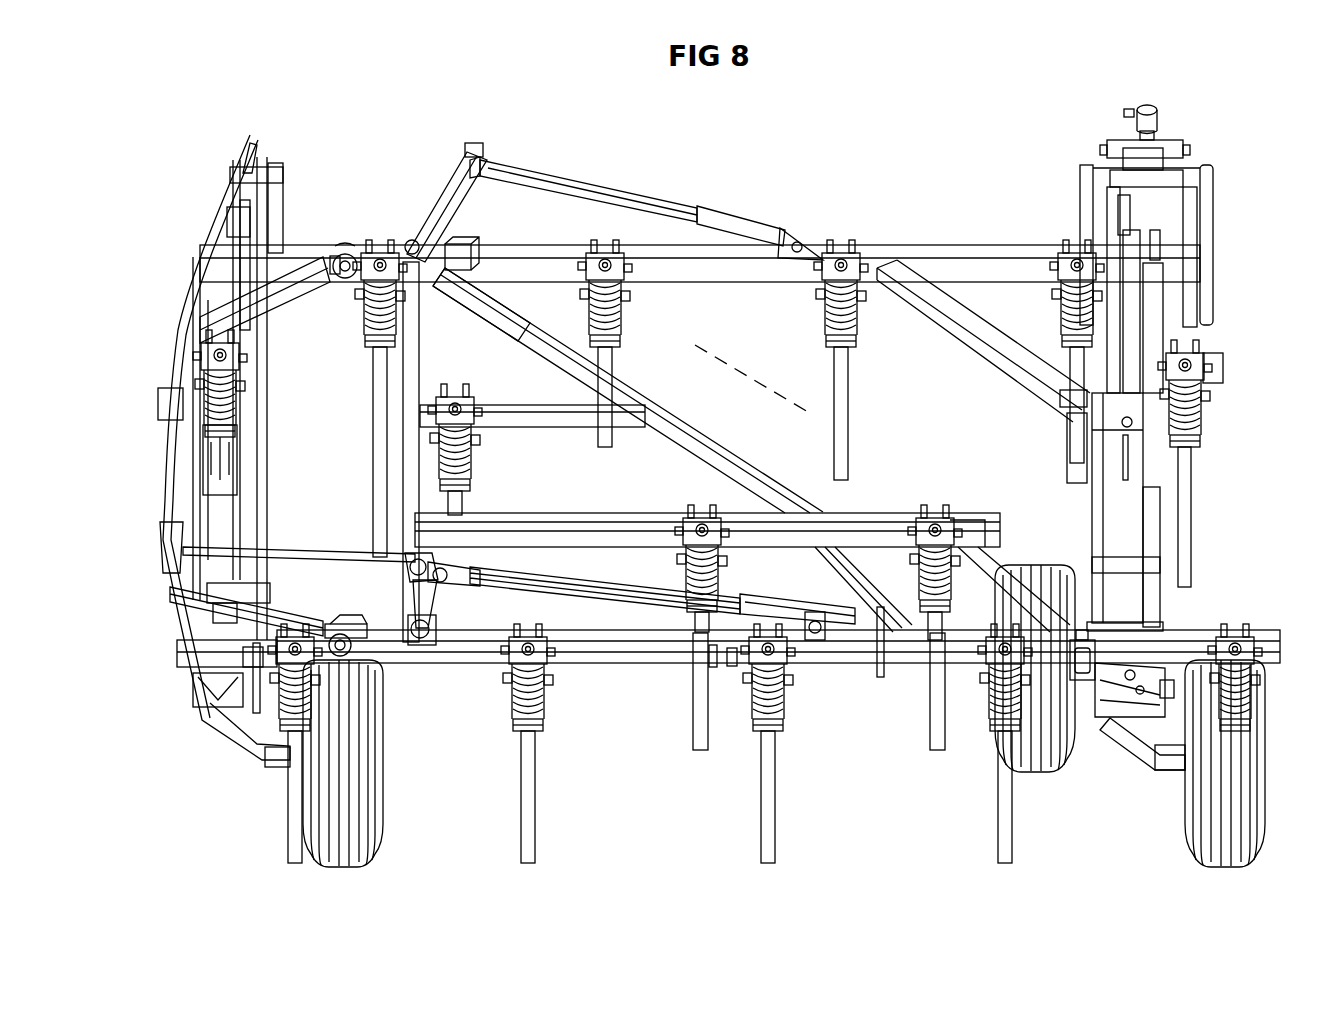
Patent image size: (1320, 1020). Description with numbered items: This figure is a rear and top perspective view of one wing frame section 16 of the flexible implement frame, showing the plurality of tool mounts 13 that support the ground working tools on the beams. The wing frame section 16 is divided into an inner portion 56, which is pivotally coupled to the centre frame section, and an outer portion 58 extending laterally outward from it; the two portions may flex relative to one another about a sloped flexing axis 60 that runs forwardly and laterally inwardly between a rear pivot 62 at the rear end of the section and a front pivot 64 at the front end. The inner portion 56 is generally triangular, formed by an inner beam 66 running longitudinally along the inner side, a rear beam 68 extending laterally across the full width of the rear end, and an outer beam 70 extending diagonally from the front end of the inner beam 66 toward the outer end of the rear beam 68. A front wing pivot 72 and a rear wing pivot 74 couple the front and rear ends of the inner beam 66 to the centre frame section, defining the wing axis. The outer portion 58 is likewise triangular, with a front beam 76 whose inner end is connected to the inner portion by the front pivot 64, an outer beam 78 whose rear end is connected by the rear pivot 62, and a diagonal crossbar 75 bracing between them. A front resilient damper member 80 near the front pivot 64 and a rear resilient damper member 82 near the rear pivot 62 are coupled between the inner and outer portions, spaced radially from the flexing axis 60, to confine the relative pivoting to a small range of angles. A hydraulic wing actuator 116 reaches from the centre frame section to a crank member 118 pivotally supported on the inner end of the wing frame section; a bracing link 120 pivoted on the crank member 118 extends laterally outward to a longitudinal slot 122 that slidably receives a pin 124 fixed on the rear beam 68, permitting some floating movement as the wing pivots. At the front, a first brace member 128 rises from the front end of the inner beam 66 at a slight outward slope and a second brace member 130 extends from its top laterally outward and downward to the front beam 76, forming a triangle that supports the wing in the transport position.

The wing frame section 16 is at (905, 66).
The tool mount 13 is at (540, 829).
The inner portion 56 is at (721, 413).
The outer portion 58 is at (820, 373).
The flexing axis 60 is at (723, 357).
The rear pivot 62 is at (1110, 672).
The front pivot 64 is at (461, 312).
The inner beam 66 is at (405, 498).
The rear beam 68 is at (472, 655).
The outer beam 70 is at (720, 457).
The front wing pivot 72 is at (345, 252).
The rear wing pivot 74 is at (338, 630).
The crossbar 75 is at (1003, 380).
The front beam 76 is at (958, 252).
The outer beam 78 is at (1135, 498).
The front resilient damper member 80 is at (458, 240).
The rear resilient damper member 82 is at (1072, 672).
The hydraulic wing actuator 116 is at (285, 548).
The crank member 118 is at (425, 592).
The bracing link 120 is at (618, 600).
The longitudinal slot 122 is at (780, 612).
The pin 124 is at (818, 645).
The first brace member 128 is at (440, 204).
The second brace member 130 is at (573, 183).